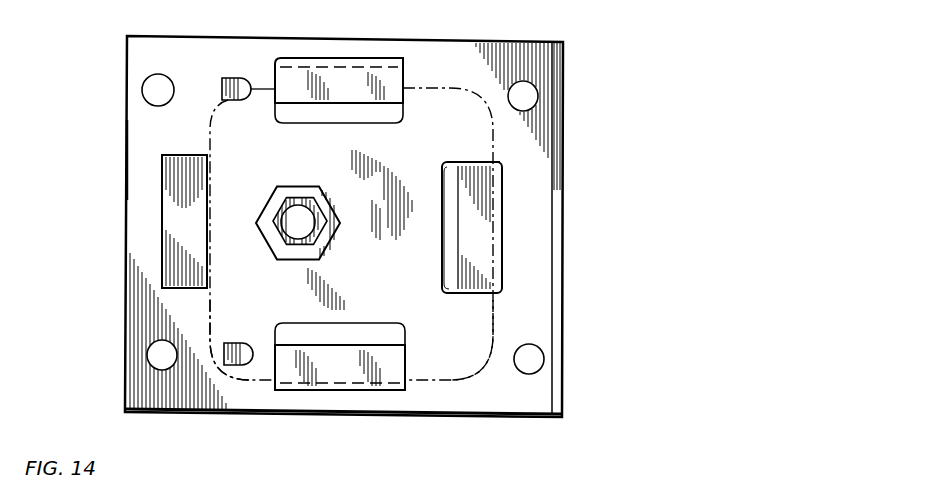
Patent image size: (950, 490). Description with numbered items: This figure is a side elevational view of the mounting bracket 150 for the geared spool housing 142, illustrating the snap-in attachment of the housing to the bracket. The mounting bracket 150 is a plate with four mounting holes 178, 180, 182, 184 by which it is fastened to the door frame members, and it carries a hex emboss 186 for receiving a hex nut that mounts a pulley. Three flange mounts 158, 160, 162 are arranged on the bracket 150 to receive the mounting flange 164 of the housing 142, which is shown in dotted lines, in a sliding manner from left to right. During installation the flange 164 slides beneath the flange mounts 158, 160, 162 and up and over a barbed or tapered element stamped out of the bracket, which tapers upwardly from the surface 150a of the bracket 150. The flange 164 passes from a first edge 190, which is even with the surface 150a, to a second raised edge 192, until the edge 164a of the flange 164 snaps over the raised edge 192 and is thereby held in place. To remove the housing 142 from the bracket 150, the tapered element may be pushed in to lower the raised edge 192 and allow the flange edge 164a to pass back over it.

The mounting bracket 150 is at (519, 42).
The surface of bracket 150a is at (134, 160).
The geared spool housing 142 is at (492, 158).
The flange mount 158 is at (370, 88).
The flange mount 160 is at (480, 224).
The flange mount 162 is at (368, 372).
The mounting flange 164 is at (493, 326).
The edge of flange 164a is at (210, 325).
The mounting hole 178 is at (150, 78).
The mounting hole 180 is at (523, 96).
The mounting hole 182 is at (162, 355).
The mounting hole 184 is at (529, 359).
The hex emboss 186 is at (338, 202).
The first edge 190 is at (162, 214).
The second raised edge 192 is at (208, 196).